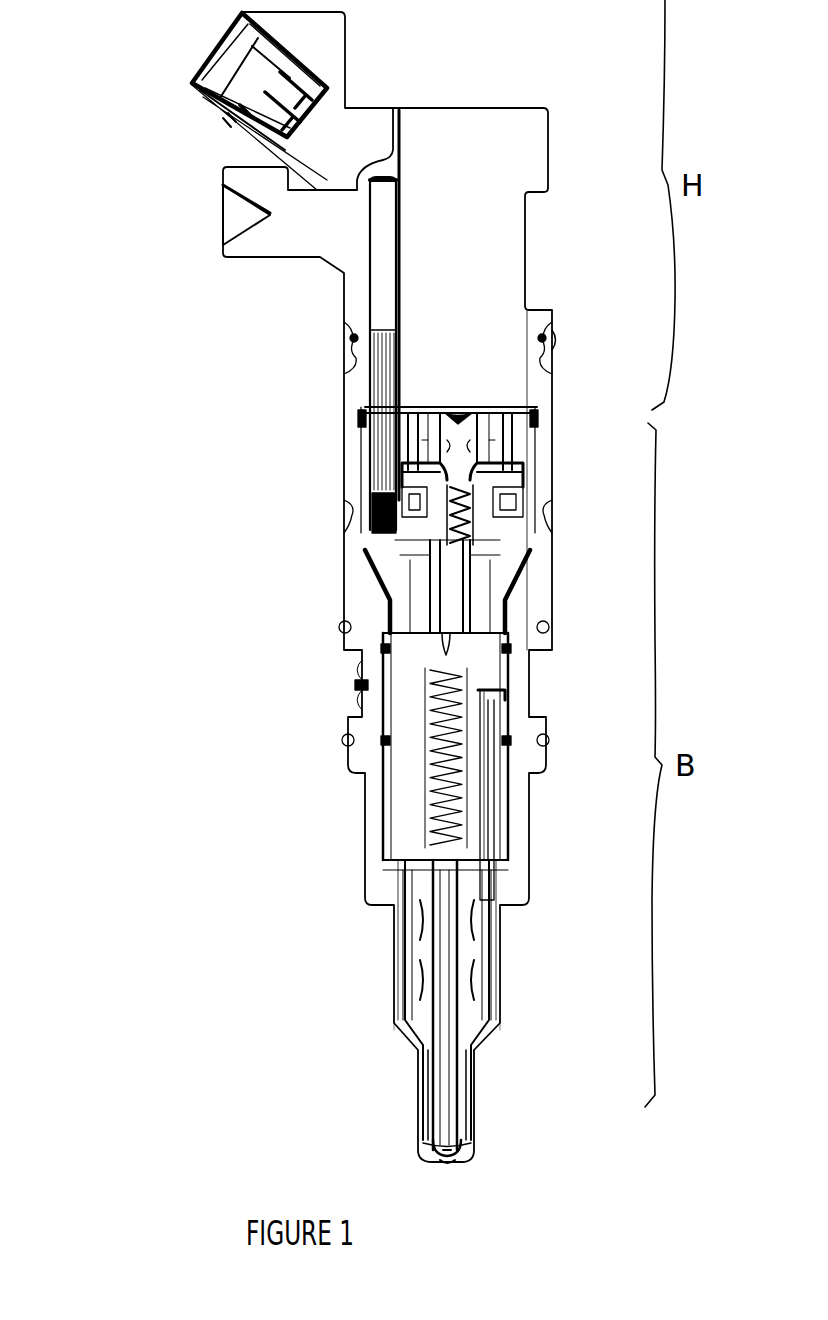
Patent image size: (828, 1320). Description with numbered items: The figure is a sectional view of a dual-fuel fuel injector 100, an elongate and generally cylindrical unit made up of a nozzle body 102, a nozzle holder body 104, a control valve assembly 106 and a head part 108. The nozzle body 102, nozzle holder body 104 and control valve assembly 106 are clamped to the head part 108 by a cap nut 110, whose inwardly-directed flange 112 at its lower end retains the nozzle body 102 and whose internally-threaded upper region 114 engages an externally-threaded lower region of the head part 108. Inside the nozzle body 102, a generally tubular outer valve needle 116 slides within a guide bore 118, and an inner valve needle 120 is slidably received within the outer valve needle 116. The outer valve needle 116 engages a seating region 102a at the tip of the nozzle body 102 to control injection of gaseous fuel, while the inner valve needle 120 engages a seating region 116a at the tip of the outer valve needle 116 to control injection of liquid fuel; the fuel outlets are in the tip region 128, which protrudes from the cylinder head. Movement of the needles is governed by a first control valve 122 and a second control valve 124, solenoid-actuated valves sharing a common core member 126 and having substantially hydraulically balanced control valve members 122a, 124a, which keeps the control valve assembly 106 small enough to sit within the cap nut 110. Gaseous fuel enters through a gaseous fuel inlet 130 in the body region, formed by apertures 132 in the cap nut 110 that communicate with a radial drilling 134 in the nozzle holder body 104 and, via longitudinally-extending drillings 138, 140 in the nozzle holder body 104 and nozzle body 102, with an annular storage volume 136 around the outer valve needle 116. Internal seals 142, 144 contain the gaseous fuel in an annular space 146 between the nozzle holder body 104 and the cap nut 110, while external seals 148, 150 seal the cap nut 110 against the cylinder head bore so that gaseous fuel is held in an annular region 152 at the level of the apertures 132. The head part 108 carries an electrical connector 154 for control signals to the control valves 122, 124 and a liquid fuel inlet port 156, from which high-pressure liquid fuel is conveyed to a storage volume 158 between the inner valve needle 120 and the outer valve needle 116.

The fuel injector 100 is at (96, 228).
The nozzle body 102 is at (380, 1045).
The seating region 102a is at (465, 1160).
The nozzle holder body 104 is at (398, 794).
The control valve assembly 106 is at (392, 585).
The head part 108 is at (489, 267).
The cap nut 110 is at (538, 579).
The inwardly-directed flange 112 is at (508, 905).
The internally-threaded upper region 114 is at (552, 357).
The outer valve needle 116 is at (462, 998).
The seating region 116a is at (440, 1165).
The guide bore 118 is at (412, 957).
The inner valve needle 120 is at (452, 1078).
The first control valve 122 is at (518, 437).
The control valve member 122a is at (528, 412).
The second control valve 124 is at (535, 598).
The control valve member 124a is at (392, 578).
The common core member 126 is at (548, 515).
The tip region 128 is at (411, 1155).
The gaseous fuel inlet 130 is at (342, 684).
The apertures 132 is at (522, 686).
The radial drilling 134 is at (508, 692).
The storage volume 136 is at (470, 1042).
The longitudinally-extending drilling 138 is at (498, 793).
The longitudinally-extending drilling 140 is at (494, 880).
The internal seal 142 is at (540, 645).
The internal seal 144 is at (549, 741).
The annular space 146 is at (500, 708).
The external seal 148 is at (339, 630).
The external seal 150 is at (342, 742).
The annular region 152 is at (338, 696).
The electrical connector 154 is at (210, 52).
The liquid fuel inlet port 156 is at (258, 202).
The storage volume 158 is at (470, 1110).